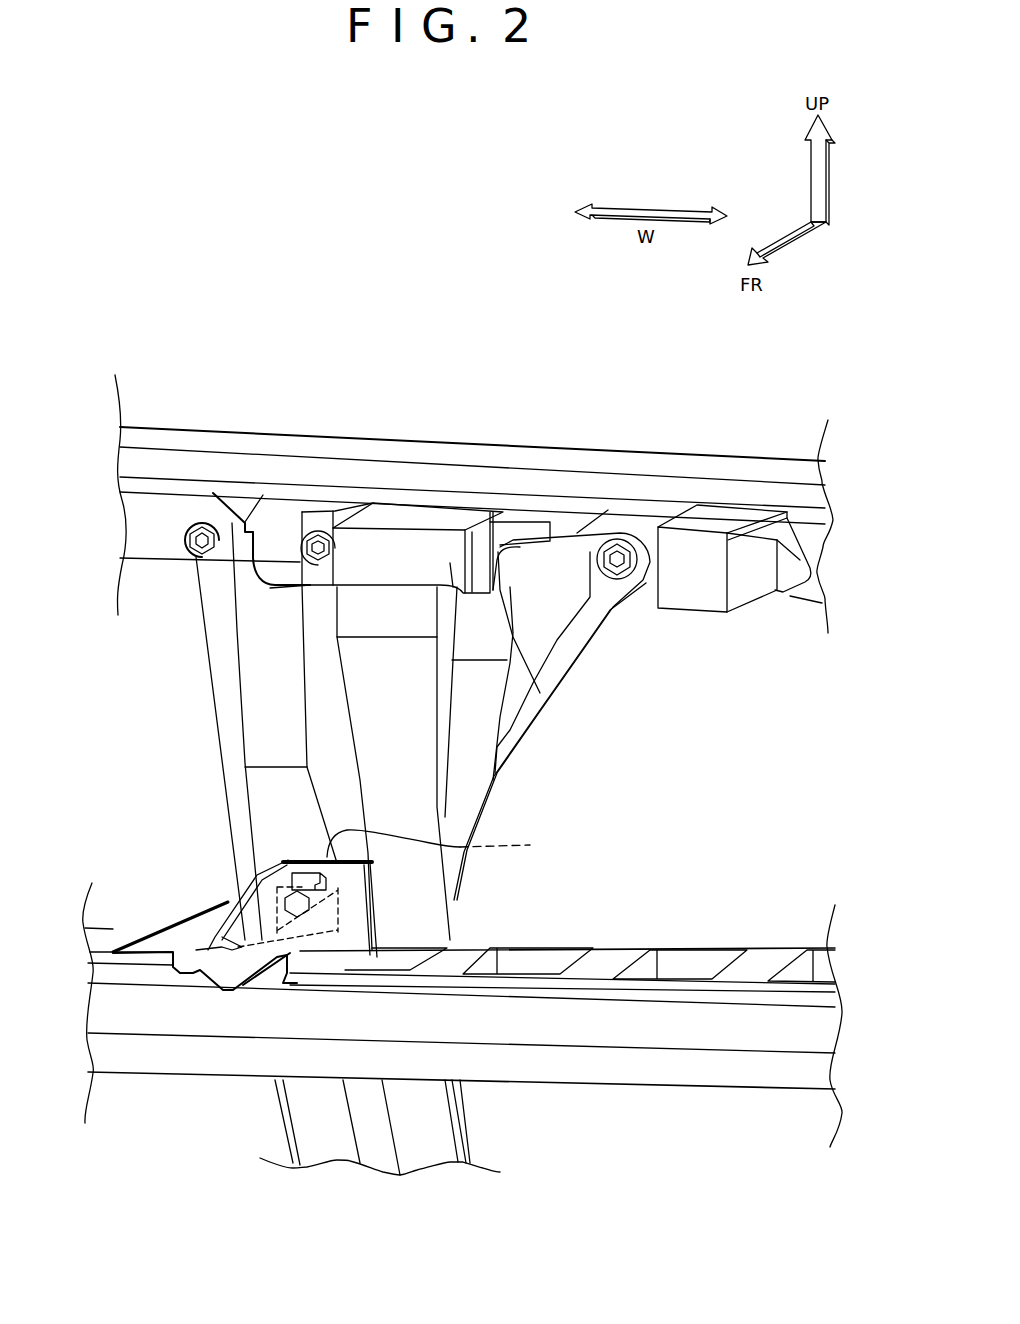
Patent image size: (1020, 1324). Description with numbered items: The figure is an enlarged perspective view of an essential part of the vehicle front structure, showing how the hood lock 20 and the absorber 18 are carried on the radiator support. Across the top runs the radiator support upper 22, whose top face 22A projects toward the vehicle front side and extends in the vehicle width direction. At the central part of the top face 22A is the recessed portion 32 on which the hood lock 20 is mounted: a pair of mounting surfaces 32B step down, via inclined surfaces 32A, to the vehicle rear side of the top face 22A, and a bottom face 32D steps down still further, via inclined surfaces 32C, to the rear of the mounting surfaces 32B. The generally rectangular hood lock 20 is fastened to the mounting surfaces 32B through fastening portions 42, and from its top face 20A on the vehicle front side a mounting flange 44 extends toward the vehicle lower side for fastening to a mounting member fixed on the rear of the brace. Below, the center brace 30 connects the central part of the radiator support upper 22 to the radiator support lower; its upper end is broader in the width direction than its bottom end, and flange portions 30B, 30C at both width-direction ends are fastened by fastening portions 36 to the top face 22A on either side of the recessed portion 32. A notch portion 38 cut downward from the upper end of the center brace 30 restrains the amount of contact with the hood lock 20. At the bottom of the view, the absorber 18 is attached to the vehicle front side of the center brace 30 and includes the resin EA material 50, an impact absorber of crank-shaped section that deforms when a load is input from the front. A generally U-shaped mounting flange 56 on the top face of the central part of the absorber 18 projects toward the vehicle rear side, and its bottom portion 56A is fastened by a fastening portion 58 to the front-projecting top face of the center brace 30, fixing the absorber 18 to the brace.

The absorber 18 is at (462, 1015).
The hood lock 20 is at (414, 880).
The top face 20A is at (398, 590).
The radiator support upper 22 is at (190, 423).
The top face 22A is at (137, 530).
The center brace 30 is at (394, 731).
The flange portion 30B is at (217, 650).
The flange portion 30C is at (570, 653).
The recessed portion 32 is at (468, 487).
The inclined surface 32A is at (282, 560).
The mounting surface 32B is at (312, 585).
The inclined surface 32C is at (392, 530).
The bottom face 32D is at (434, 493).
The fastening portion 36 is at (198, 547).
The notch portion 38 is at (243, 523).
The fastening portion 42 is at (305, 592).
The mounting flange 44 is at (460, 593).
The EA material 50 is at (598, 997).
The mounting flange 56 is at (347, 887).
The bottom portion 56A is at (454, 842).
The fastening portion 58 is at (290, 870).